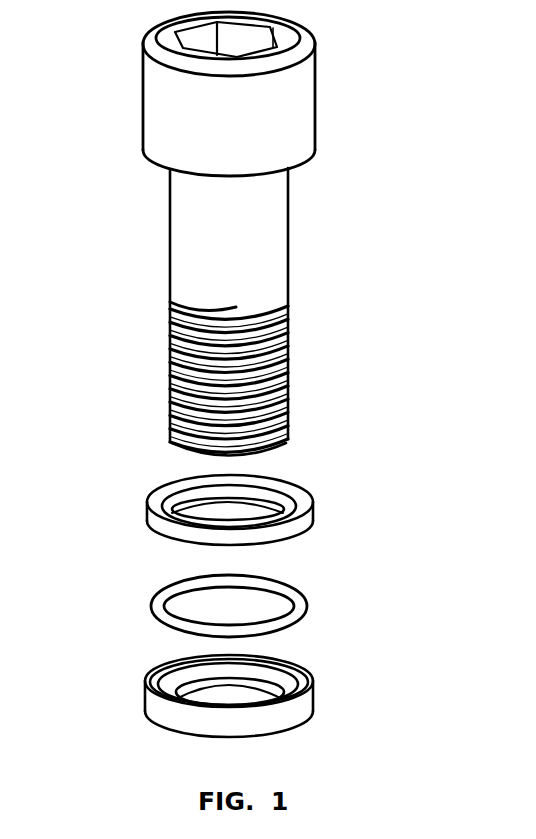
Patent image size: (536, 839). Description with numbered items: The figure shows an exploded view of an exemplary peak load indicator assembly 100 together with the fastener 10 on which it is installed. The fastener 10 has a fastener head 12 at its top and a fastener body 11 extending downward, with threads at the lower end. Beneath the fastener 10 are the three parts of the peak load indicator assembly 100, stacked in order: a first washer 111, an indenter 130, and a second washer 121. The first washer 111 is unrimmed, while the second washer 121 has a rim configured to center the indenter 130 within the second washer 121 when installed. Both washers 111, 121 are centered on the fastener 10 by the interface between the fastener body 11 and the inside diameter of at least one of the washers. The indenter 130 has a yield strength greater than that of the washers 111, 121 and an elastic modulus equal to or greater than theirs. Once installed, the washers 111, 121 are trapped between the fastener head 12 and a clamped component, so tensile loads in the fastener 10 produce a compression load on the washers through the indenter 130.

The fastener 10 is at (229, 234).
The fastener body 11 is at (294, 193).
The fastener head 12 is at (320, 101).
The peak load indicator assembly 100 is at (255, 615).
The first washer 111 is at (136, 509).
The indenter 130 is at (144, 599).
The second washer 121 is at (137, 695).